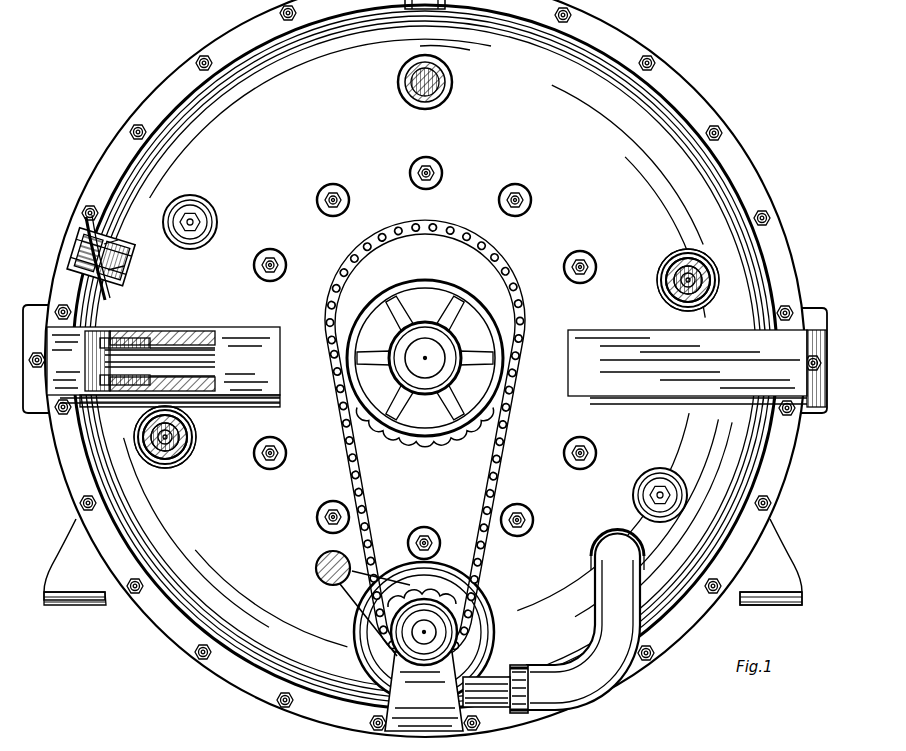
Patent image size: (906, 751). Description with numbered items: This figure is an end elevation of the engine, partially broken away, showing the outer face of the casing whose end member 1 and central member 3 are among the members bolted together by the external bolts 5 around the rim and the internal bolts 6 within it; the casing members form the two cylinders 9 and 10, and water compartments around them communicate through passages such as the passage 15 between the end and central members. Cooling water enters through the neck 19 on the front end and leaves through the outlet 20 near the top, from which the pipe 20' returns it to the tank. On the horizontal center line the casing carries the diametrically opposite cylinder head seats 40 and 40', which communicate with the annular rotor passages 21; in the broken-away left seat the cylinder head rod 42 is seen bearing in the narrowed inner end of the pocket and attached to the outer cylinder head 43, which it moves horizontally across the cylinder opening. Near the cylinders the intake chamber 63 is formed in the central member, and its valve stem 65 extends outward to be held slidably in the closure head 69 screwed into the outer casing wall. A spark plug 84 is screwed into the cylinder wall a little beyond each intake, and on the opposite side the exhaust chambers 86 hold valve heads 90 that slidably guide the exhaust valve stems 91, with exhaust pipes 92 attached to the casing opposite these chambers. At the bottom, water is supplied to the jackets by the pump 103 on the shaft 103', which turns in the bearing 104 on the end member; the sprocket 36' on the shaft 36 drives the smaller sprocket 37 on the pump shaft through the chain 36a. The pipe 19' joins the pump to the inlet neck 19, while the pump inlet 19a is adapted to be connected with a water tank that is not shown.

The end member 1 is at (425, 368).
The central member 3 is at (72, 260).
The external bolts 5 is at (136, 142).
The internal bolts 6 is at (352, 201).
The cylinder 9 is at (113, 384).
The cylinder 10 is at (104, 408).
The water passage 15 is at (432, 8).
The neck 19 is at (585, 611).
The pipe 19' is at (549, 689).
The pump inlet 19a is at (326, 560).
The outlet 20 is at (447, 82).
The pipe 20' is at (454, 56).
The rotor passages 21 is at (136, 340).
The shaft 36 is at (425, 358).
The sprocket 36' is at (424, 449).
The chain 36a is at (500, 476).
The small sprocket 37 is at (362, 612).
The cylinder head seat 40 is at (163, 361).
The cylinder head seat 40' is at (697, 368).
The cylinder head rod 42 is at (197, 360).
The outer cylinder head 43 is at (98, 347).
The intake chamber 63 is at (125, 270).
The valve stem 65 is at (120, 252).
The closure head 69 is at (80, 237).
The spark plug 84 is at (212, 204).
The exhaust chamber 86 is at (190, 428).
The valve head 90 is at (167, 466).
The valve stem 91 is at (152, 452).
The exhaust pipe 92 is at (182, 462).
The pump 103 is at (499, 643).
The shaft 103' is at (513, 653).
The bearing 104 is at (424, 632).